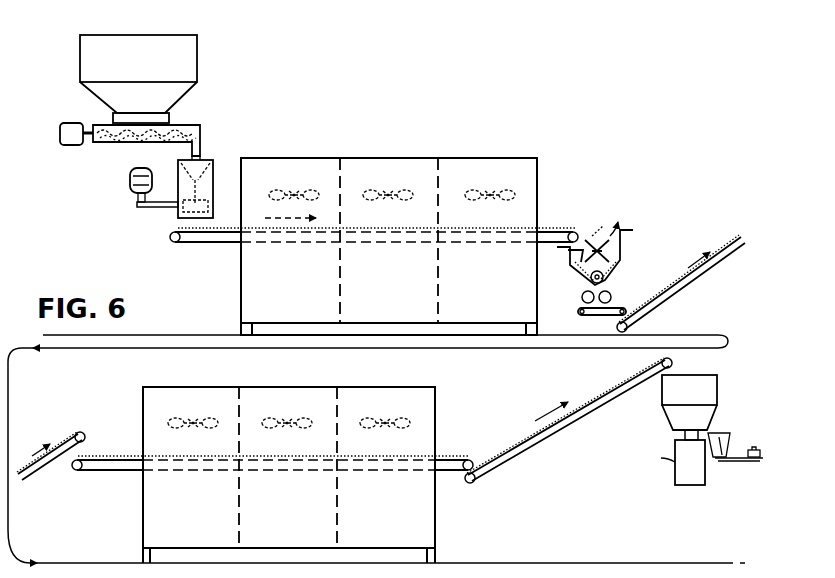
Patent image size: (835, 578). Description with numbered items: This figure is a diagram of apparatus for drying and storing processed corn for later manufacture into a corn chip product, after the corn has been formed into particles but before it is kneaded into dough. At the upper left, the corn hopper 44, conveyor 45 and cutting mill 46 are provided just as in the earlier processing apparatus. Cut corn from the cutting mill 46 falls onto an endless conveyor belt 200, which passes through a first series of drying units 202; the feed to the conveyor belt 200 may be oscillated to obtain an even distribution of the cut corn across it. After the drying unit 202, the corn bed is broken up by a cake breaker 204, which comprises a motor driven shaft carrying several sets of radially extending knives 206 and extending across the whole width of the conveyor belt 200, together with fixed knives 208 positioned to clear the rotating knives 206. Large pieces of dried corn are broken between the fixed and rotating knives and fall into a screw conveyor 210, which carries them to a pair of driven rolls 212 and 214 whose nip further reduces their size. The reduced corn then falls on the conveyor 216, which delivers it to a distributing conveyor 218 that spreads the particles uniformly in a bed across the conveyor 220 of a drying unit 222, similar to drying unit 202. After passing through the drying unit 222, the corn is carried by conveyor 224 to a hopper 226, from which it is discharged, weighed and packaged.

The corn hopper 44 is at (199, 49).
The conveyor 45 is at (130, 143).
The cutting mill 46 is at (170, 214).
The endless conveyor belt 200 is at (220, 244).
The drying unit 202 is at (372, 306).
The cake breaker 204 is at (613, 218).
The radially extending knives 206 is at (614, 254).
The fixed knives 208 is at (588, 278).
The screw conveyor 210 is at (606, 274).
The driven roll 212 is at (611, 297).
The driven roll 214 is at (582, 297).
The conveyor 216 is at (595, 316).
The distributing conveyor 218 is at (688, 290).
The conveyor 220 is at (88, 472).
The drying unit 222 is at (273, 535).
The conveyor 224 is at (520, 452).
The hopper 226 is at (672, 397).